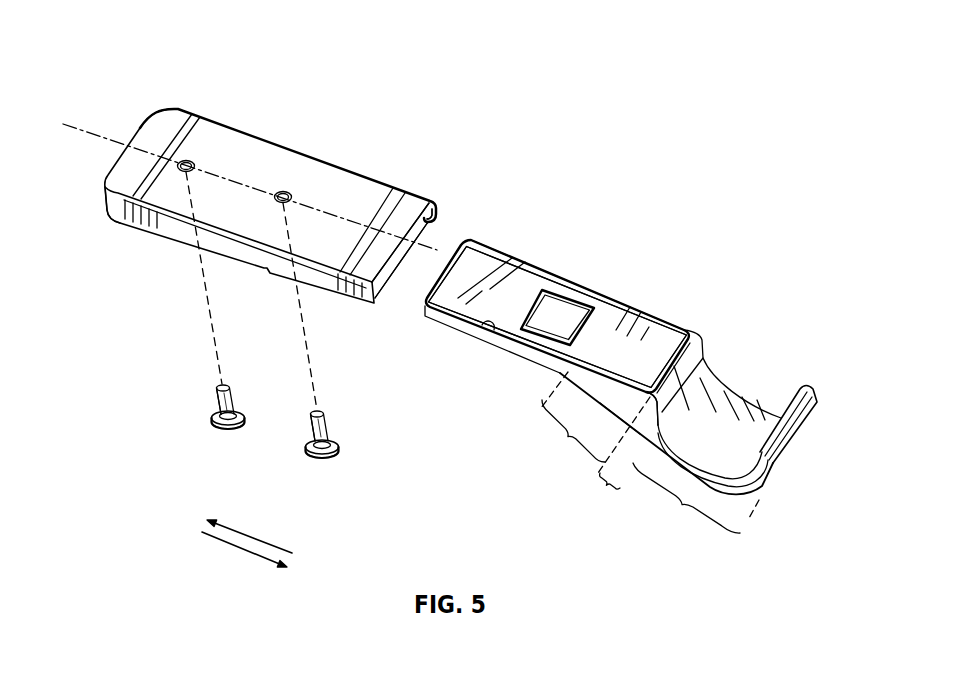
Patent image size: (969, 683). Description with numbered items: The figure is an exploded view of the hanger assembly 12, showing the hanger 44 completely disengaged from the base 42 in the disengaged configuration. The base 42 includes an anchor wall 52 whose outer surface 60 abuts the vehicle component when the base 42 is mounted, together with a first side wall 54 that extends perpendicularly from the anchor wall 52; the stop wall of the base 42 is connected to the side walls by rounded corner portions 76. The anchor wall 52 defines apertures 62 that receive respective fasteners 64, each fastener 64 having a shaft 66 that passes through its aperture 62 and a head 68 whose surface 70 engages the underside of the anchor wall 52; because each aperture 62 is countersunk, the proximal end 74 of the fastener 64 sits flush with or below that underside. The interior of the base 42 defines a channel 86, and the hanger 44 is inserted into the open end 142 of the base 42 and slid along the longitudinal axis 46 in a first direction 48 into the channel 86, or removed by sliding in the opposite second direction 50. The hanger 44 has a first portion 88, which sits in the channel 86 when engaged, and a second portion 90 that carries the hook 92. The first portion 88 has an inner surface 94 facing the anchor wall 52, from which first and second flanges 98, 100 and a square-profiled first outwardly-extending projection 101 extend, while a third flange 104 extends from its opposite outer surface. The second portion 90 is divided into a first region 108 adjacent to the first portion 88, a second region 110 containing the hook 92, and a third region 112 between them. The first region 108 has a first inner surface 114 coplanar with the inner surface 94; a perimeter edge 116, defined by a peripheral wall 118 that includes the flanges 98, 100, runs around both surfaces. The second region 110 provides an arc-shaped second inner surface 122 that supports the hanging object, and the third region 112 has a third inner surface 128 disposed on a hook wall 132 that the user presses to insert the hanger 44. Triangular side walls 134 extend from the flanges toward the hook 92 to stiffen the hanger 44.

The hanger assembly 12 is at (127, 22).
The base 42 is at (363, 188).
The hanger 44 is at (552, 283).
The longitudinal axis 46 is at (64, 124).
The first direction 48 is at (250, 537).
The second direction 50 is at (241, 549).
The anchor wall 52 is at (257, 150).
The first side wall 54 is at (160, 225).
The outer surface 60 is at (188, 120).
The apertures 62 is at (192, 161).
The fasteners 64 is at (225, 383).
The shaft 66 is at (217, 397).
The head 68 is at (214, 424).
The surface 70 is at (235, 411).
The proximal end 74 is at (227, 436).
The rounded corner portions 76 is at (163, 109).
The channel 86 is at (425, 236).
The first portion 88 is at (483, 271).
The second portion 90 is at (760, 393).
The hook 92 is at (790, 392).
The inner surface 94 is at (522, 282).
The first flange 98 is at (485, 333).
The second flange 100 is at (585, 287).
The first outwardly-extending projection 101 is at (543, 336).
The third flange 104 is at (465, 328).
The first region 108 is at (569, 428).
The second region 110 is at (696, 502).
The third region 112 is at (611, 457).
The first inner surface 114 is at (680, 327).
The perimeter edge 116 is at (618, 293).
The peripheral wall 118 is at (648, 308).
The second inner surface 122 is at (733, 400).
The third inner surface 128 is at (698, 358).
The hook wall 132 is at (655, 412).
The triangular side walls 134 is at (622, 410).
The open end 142 is at (382, 296).